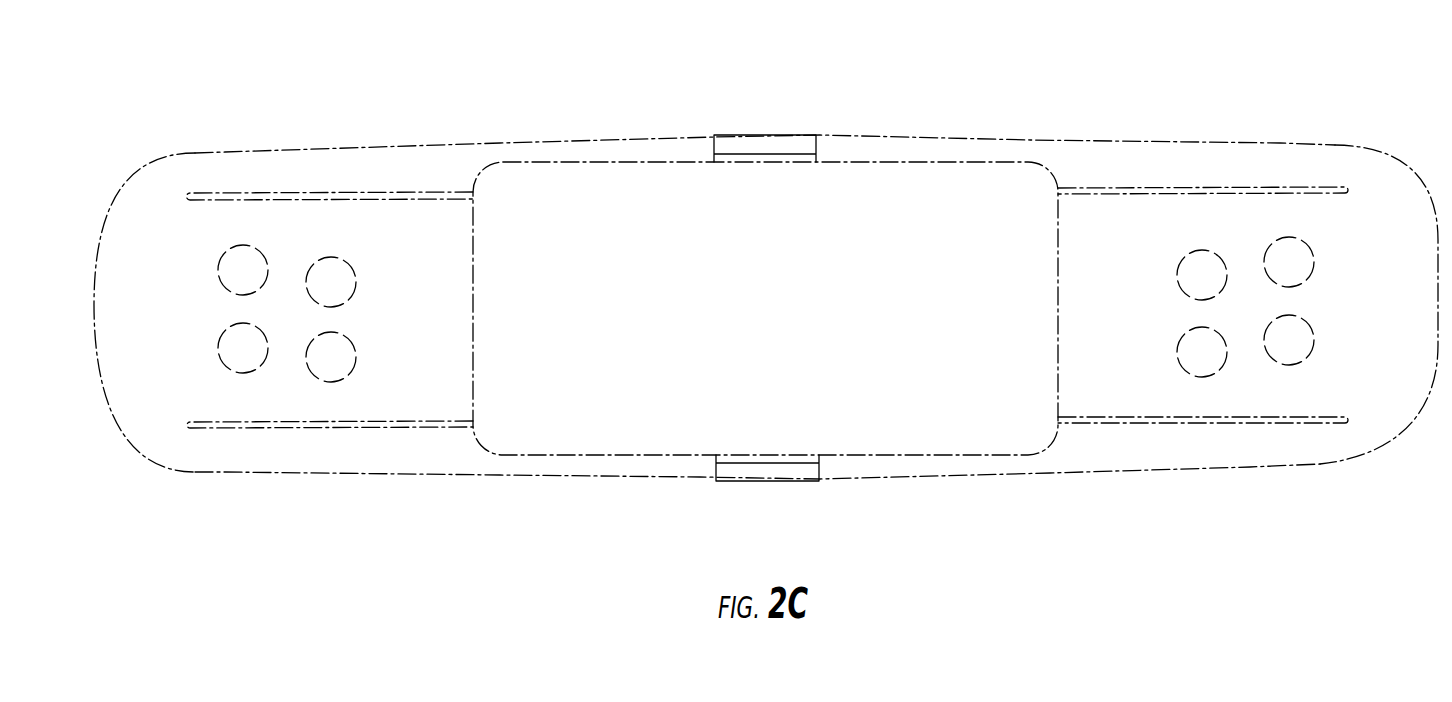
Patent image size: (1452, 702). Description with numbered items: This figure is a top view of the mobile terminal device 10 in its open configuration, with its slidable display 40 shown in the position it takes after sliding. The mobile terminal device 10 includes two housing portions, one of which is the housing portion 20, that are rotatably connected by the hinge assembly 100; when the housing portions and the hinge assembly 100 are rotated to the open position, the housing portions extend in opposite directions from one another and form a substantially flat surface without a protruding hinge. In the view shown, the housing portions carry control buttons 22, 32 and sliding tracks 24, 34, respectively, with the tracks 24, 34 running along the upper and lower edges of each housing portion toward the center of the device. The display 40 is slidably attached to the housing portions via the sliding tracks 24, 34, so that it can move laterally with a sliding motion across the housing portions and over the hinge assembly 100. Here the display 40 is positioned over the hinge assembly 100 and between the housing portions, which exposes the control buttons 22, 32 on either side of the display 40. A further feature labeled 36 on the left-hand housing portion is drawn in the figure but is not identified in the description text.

The device body 10 is at (766, 302).
The second end portion 20 is at (1265, 452).
The apertures of second end portion 22 is at (1308, 260).
The slots of second end portion 24 is at (1193, 188).
The apertures of first end portion 32 is at (230, 272).
The slots of first end portion 34 is at (271, 193).
The first end portion 36 is at (382, 448).
The central module 40 is at (839, 378).
The tab 100 is at (761, 125).